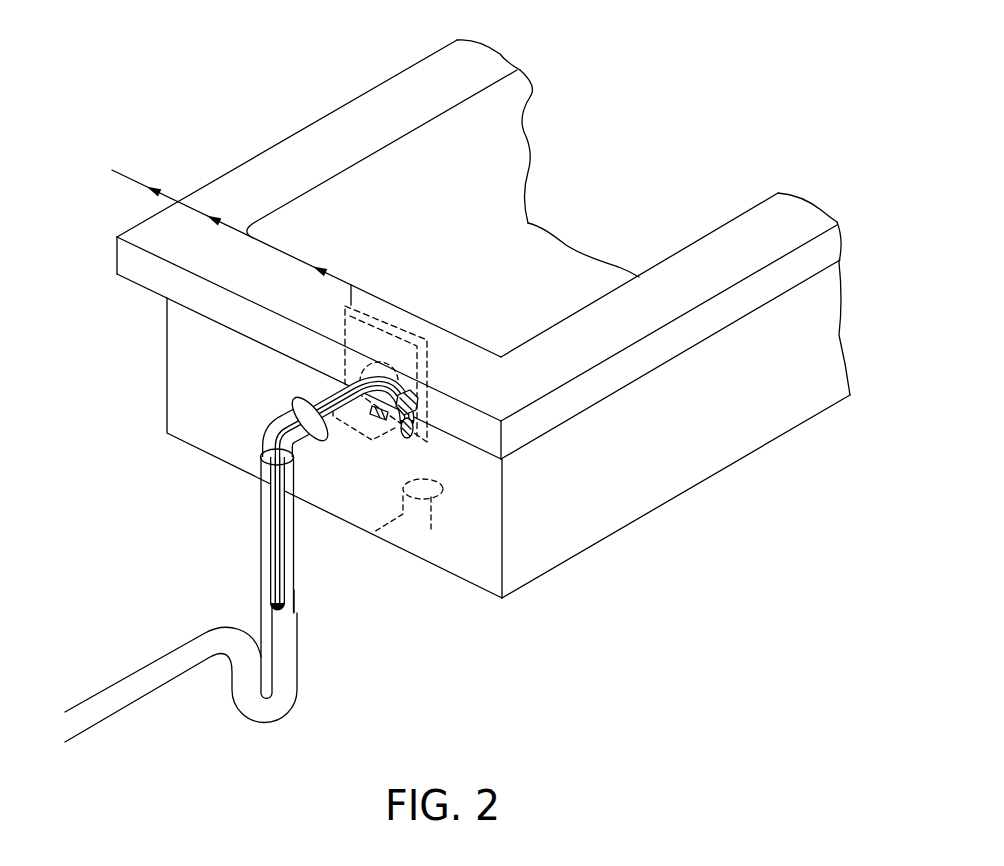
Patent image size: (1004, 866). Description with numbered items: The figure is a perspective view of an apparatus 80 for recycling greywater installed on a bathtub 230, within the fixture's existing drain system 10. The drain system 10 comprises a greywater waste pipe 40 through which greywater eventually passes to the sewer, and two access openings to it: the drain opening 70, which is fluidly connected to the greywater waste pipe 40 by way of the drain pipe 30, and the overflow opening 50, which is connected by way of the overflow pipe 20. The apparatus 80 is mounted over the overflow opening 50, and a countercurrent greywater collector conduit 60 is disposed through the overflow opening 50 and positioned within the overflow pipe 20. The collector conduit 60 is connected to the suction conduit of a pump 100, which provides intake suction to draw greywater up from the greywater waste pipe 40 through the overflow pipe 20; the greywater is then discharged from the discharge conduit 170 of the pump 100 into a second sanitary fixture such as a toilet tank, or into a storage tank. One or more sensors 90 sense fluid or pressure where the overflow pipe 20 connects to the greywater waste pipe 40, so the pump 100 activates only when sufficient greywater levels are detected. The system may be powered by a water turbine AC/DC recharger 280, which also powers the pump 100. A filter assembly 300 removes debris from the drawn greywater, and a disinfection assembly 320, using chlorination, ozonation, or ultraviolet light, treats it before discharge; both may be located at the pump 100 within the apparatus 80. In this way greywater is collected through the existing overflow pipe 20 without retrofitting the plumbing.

The drain system 10 is at (777, 408).
The overflow pipe 20 is at (263, 530).
The drain pipe 30 is at (413, 527).
The greywater waste pipe 40 is at (133, 683).
The overflow opening 50 is at (292, 402).
The greywater collector conduit 60 is at (272, 542).
The drain opening 70 is at (445, 492).
The apparatus 80 is at (377, 307).
The sensor 90 is at (298, 606).
The pump 100 is at (415, 400).
The discharge conduit 170 is at (246, 231).
The bathtub 230 is at (115, 258).
The water turbine AC/DC recharger 280 is at (272, 600).
The filter assembly 300 is at (403, 425).
The disinfection assembly 320 is at (412, 428).